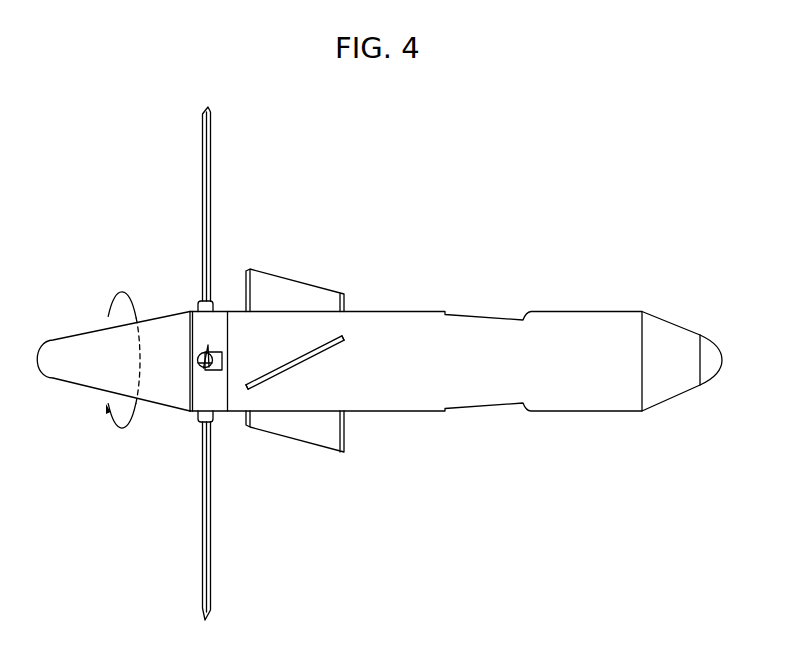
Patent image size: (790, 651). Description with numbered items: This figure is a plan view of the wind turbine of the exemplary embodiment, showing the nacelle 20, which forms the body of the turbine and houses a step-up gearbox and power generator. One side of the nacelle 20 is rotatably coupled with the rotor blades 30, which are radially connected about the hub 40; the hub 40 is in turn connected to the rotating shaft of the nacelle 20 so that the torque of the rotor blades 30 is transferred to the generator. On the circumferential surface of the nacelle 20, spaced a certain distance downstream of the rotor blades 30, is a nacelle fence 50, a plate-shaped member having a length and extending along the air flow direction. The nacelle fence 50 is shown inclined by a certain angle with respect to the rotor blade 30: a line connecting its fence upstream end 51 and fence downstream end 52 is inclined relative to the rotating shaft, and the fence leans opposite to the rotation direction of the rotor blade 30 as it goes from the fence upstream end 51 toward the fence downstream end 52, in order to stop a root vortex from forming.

The nacelle 20 is at (570, 307).
The rotor blades 30 is at (202, 203).
The hub 40 is at (157, 319).
The nacelle fence 50 is at (292, 355).
The fence upstream end 51 is at (247, 389).
The fence downstream end 52 is at (343, 338).